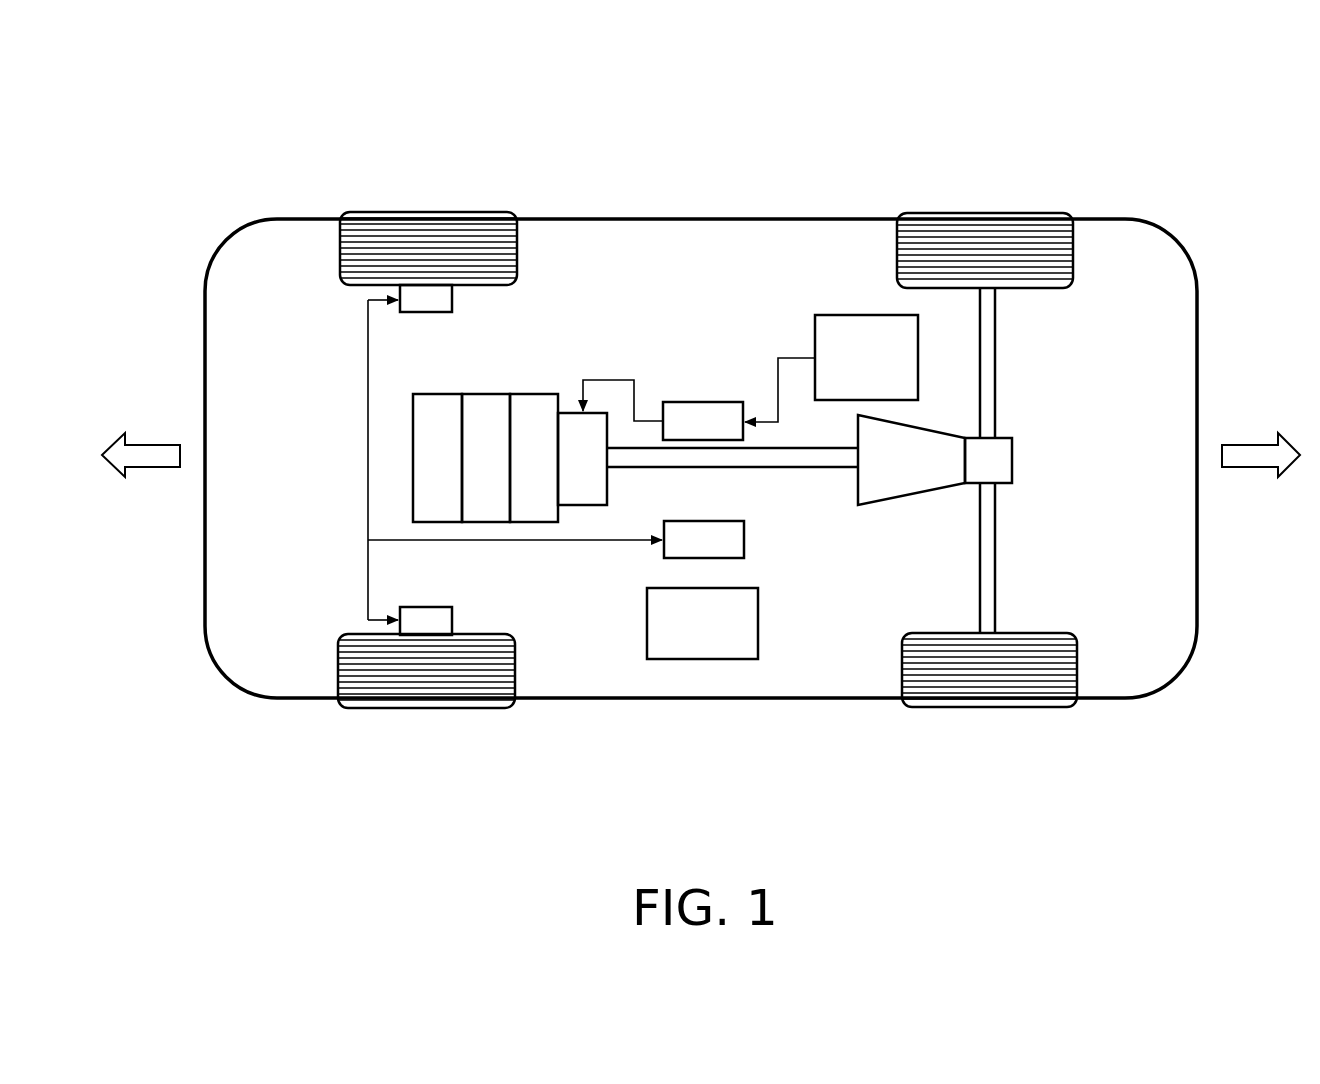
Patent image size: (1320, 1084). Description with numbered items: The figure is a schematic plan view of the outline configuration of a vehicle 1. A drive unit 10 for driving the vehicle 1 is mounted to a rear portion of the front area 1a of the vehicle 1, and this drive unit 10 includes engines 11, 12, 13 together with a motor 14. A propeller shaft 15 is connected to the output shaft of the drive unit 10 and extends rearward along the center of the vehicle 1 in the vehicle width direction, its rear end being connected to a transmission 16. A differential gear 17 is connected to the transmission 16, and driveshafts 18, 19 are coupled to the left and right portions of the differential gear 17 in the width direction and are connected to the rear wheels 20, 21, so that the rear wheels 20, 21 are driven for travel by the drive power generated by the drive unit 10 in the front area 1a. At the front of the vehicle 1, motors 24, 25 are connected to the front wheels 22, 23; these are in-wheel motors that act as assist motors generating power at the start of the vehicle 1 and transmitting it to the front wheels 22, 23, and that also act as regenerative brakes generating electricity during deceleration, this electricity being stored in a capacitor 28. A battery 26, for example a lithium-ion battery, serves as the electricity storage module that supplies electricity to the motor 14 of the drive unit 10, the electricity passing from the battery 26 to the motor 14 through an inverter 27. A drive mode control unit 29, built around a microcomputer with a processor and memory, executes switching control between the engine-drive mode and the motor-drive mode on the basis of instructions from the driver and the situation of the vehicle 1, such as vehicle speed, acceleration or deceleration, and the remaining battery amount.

The vehicle 1 is at (701, 385).
The front area 1a is at (300, 495).
The drive unit 10 is at (546, 608).
The engine 11 is at (438, 495).
The engine 12 is at (486, 495).
The engine 13 is at (534, 495).
The motor 14 is at (587, 487).
The propeller shaft 15 is at (800, 457).
The transmission 16 is at (907, 457).
The differential gear 17 is at (1003, 448).
The driveshaft 18 is at (995, 585).
The driveshaft 19 is at (988, 358).
The rear wheel 20 is at (1028, 673).
The rear wheel 21 is at (987, 230).
The front wheel 22 is at (385, 688).
The front wheel 23 is at (383, 232).
The motor 24 is at (410, 612).
The motor 25 is at (400, 295).
The battery 26 is at (860, 340).
The inverter 27 is at (703, 412).
The capacitor 28 is at (727, 540).
The drive mode control unit 29 is at (702, 637).